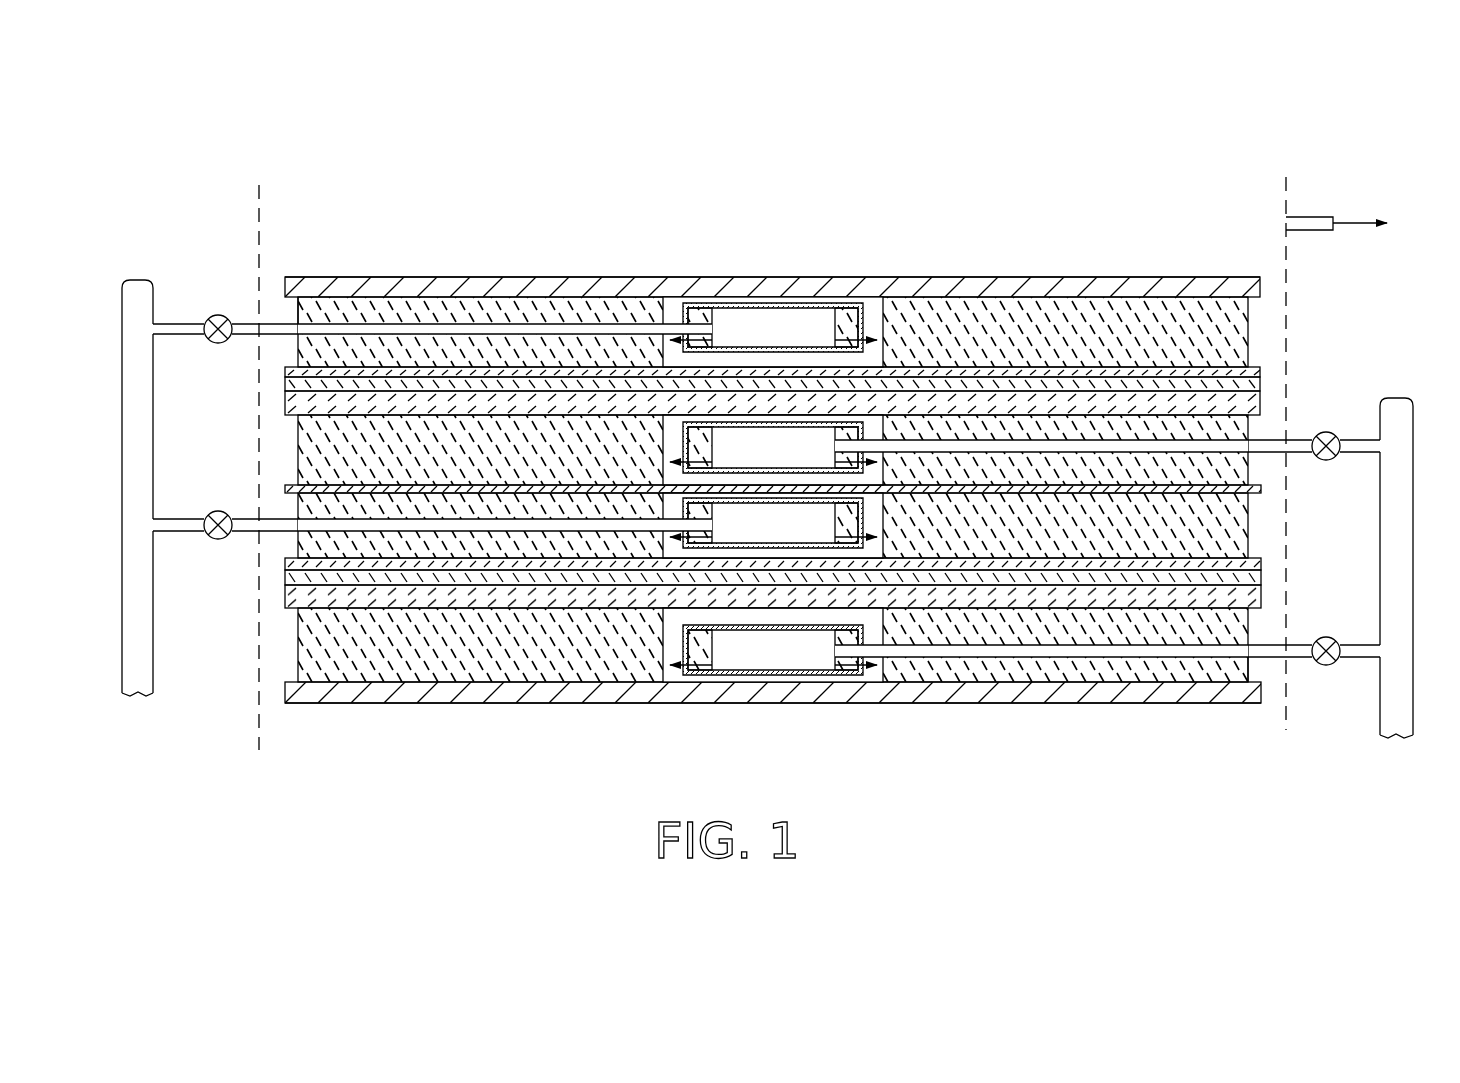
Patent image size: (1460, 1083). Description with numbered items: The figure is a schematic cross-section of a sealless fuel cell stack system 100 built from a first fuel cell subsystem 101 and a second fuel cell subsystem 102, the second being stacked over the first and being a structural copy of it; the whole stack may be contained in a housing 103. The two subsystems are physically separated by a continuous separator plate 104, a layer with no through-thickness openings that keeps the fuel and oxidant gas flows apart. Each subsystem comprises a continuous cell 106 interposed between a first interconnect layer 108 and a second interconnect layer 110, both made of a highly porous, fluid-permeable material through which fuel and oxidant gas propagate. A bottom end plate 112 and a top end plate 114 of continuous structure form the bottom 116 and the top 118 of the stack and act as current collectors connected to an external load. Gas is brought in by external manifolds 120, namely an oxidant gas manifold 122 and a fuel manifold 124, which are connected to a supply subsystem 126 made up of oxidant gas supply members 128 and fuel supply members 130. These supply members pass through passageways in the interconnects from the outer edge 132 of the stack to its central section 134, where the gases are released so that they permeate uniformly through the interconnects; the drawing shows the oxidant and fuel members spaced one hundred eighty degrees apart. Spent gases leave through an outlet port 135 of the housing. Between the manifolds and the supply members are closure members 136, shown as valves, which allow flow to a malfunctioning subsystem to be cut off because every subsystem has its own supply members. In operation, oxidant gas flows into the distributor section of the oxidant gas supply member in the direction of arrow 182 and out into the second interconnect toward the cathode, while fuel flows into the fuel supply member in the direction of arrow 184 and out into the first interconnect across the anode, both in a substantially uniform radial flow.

The fuel cell stack system 100 is at (1141, 205).
The first fuel cell subsystem 101 is at (253, 686).
The second fuel cell subsystem 102 is at (252, 425).
The housing 103 is at (260, 214).
The continuous separator plate 104 is at (1263, 489).
The continuous cell 106 is at (776, 500).
The first interconnect layer 108 is at (461, 465).
The second interconnect layer 110 is at (1021, 340).
The bottom end plate 112 is at (594, 704).
The top end plate 114 is at (560, 277).
The bottom of stack 116 is at (444, 704).
The top of stack 118 is at (426, 272).
The external manifolds 120 is at (130, 213).
The oxidant gas manifold 122 is at (121, 308).
The fuel manifold 124 is at (1396, 416).
The supply subsystem 126 is at (247, 347).
The oxidant gas supply member 128 is at (522, 398).
The fuel supply member 130 is at (1019, 582).
The outer edge 132 is at (290, 311).
The central section 134 is at (768, 378).
The outlet port 135 is at (1309, 216).
The closure member 136 is at (221, 541).
The arrow 182 is at (748, 340).
The arrow 184 is at (748, 665).